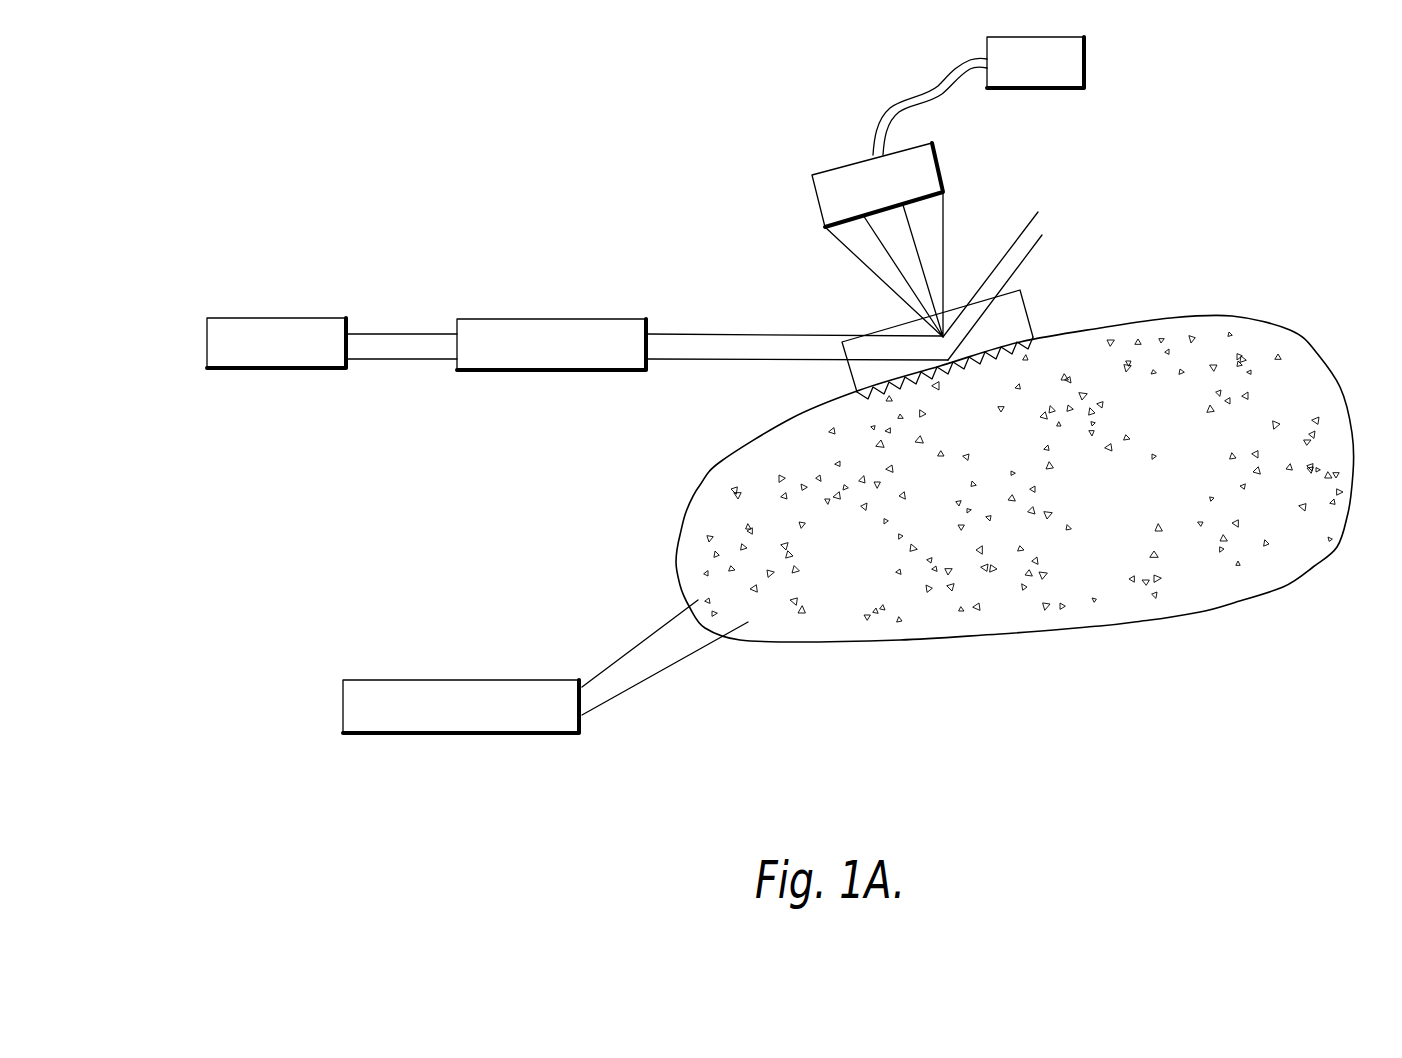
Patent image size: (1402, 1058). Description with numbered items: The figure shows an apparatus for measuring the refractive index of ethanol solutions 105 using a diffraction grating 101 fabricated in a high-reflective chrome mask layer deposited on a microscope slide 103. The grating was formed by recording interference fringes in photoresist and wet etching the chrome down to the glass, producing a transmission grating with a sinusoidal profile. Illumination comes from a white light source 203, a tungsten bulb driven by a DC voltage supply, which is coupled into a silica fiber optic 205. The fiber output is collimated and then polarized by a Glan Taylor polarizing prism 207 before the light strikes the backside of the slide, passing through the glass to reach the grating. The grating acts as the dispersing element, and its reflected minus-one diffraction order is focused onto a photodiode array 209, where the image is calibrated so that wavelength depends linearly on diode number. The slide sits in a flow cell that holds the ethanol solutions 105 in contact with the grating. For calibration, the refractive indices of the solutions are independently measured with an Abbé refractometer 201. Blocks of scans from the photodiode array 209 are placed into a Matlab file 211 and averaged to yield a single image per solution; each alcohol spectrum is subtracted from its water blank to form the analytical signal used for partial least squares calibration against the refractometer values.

The diffraction grating 101 is at (1033, 338).
The microscope slide 103 is at (1027, 308).
The ethanol solutions 105 is at (1252, 601).
The Abbé refractometer 201 is at (465, 735).
The white light source 203 is at (272, 318).
The silica fiber optic 205 is at (393, 359).
The Glan Taylor polarizing prism 207 is at (553, 319).
The photodiode array 209 is at (940, 167).
The Matlab file 211 is at (1085, 62).